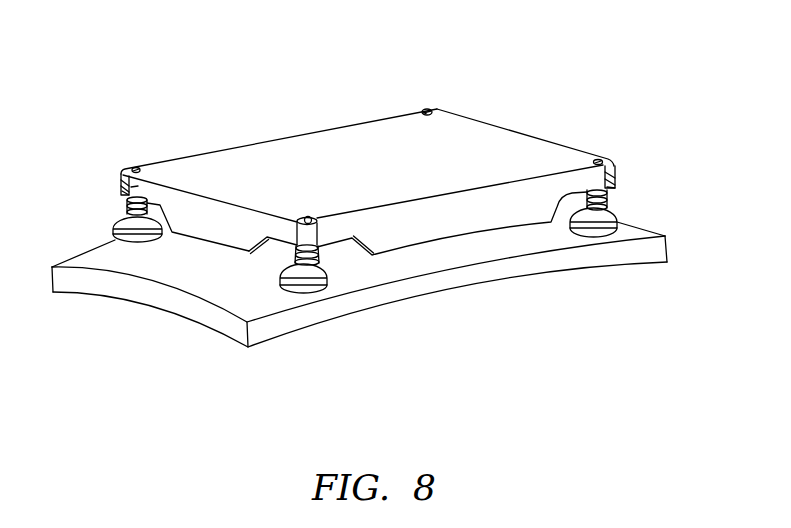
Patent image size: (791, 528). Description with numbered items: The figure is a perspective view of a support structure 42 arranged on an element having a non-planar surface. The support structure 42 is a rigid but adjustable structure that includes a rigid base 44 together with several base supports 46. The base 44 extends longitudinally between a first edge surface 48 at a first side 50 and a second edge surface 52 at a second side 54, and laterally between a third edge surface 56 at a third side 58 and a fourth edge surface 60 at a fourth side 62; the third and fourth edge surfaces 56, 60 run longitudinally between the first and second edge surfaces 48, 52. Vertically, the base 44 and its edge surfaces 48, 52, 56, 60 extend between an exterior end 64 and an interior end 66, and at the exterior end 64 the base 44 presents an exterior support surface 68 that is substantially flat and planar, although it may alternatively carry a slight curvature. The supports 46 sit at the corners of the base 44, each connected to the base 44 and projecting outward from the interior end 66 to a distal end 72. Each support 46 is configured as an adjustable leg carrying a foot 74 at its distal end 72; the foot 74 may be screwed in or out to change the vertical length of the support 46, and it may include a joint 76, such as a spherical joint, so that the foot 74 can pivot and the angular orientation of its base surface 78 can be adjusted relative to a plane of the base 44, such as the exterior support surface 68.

The support structure 42 is at (369, 133).
The base 44 is at (279, 109).
The base support 46 is at (369, 276).
The first edge surface 48 is at (97, 148).
The first side 50 is at (115, 186).
The second edge surface 52 is at (642, 129).
The second side 54 is at (603, 155).
The third edge surface 56 is at (359, 274).
The third side 58 is at (359, 274).
The fourth edge surface 60 is at (279, 109).
The fourth side 62 is at (280, 136).
The exterior end 64 is at (387, 204).
The interior end 66 is at (393, 257).
The exterior support surface 68 is at (367, 133).
The distal end 72 is at (369, 309).
The foot 74 is at (110, 233).
The joint 76 is at (125, 207).
The base surface 78 is at (369, 309).